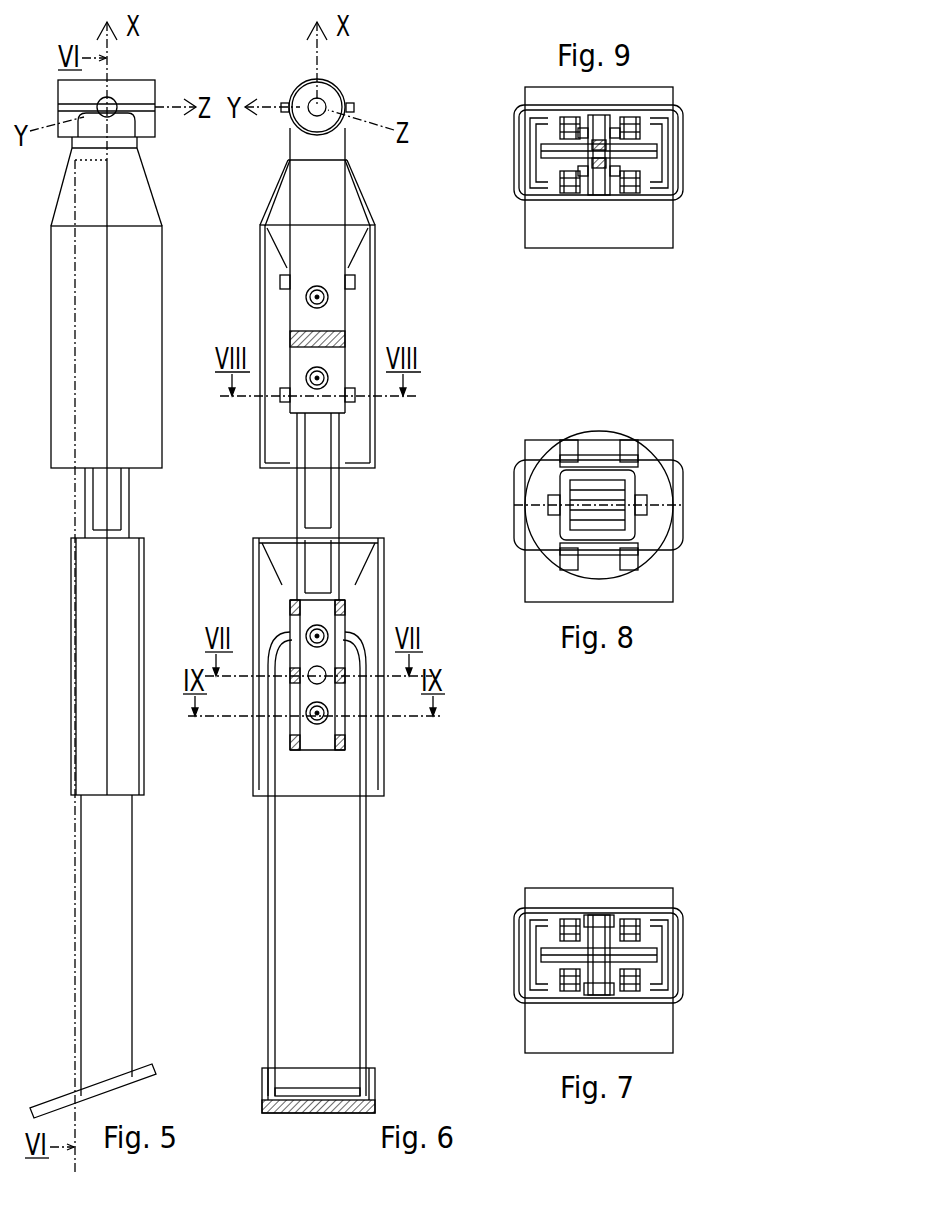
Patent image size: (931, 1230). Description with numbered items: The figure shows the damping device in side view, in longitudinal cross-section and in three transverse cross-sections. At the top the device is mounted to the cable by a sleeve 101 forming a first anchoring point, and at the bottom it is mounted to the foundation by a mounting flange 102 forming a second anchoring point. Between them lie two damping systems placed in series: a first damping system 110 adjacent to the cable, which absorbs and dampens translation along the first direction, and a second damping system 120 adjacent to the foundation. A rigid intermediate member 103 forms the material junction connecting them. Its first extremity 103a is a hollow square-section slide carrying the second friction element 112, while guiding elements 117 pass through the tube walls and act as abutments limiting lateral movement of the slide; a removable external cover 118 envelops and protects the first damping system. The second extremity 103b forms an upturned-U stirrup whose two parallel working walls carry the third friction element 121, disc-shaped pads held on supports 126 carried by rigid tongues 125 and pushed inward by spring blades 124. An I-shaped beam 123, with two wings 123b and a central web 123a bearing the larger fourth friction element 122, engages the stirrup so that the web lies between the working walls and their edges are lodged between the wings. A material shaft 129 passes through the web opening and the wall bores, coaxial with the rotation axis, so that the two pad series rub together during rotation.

In FIG. 5, the sleeve 101 is at (140, 85).
In FIG. 6, the sleeve 101 is at (340, 88).
In FIG. 5, the mounting flange 102 is at (58, 1114).
In FIG. 6, the mounting flange 102 is at (292, 1102).
In FIG. 5, the intermediate member 103 is at (85, 515).
In FIG. 6, the intermediate member 103 is at (347, 508).
In FIG. 6, the first extremity 103a is at (297, 460).
In FIG. 8, the first extremity 103a is at (622, 525).
In FIG. 6, the second extremity 103b is at (380, 729).
In FIG. 9, the second extremity 103b is at (632, 165).
In FIG. 7, the second extremity 103b is at (640, 966).
In FIG. 6, the first damping system 110 is at (351, 324).
In FIG. 6, the second friction element 112 is at (261, 476).
In FIG. 8, the second friction element 112 is at (648, 537).
In FIG. 6, the guiding elements 117 is at (280, 284).
In FIG. 5, the removable external cover 118 is at (62, 246).
In FIG. 6, the removable external cover 118 is at (262, 246).
In FIG. 6, the second damping system 120 is at (350, 665).
In FIG. 9, the third friction element 121 is at (585, 176).
In FIG. 9, the fourth friction element 122 is at (530, 196).
In FIG. 5, the I-shaped beam 123 is at (147, 973).
In FIG. 9, the I-shaped beam 123 is at (667, 130).
In FIG. 7, the I-shaped beam 123 is at (668, 940).
In FIG. 6, the central web 123a is at (338, 866).
In FIG. 6, the wings 123b is at (268, 910).
In FIG. 6, the spring blades 124 is at (298, 626).
In FIG. 9, the spring blades 124 is at (632, 176).
In FIG. 6, the rigid tongues 125 is at (320, 612).
In FIG. 9, the supports 126 is at (592, 162).
In FIG. 6, the material shaft 129 is at (313, 681).
In FIG. 7, the material shaft 129 is at (660, 932).